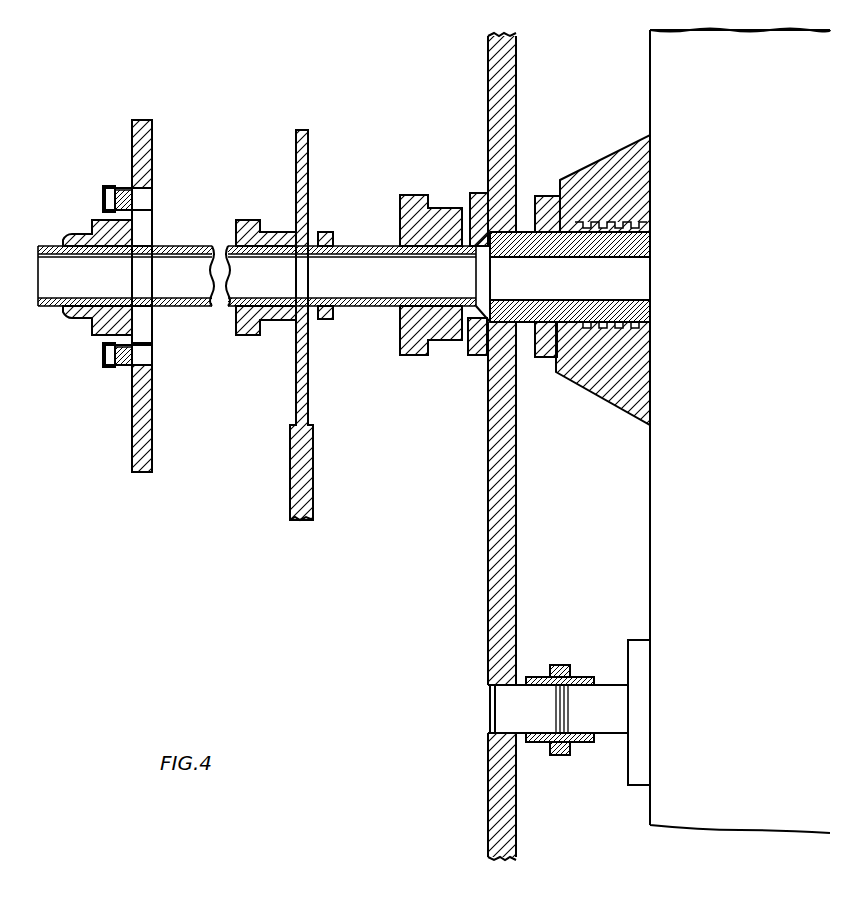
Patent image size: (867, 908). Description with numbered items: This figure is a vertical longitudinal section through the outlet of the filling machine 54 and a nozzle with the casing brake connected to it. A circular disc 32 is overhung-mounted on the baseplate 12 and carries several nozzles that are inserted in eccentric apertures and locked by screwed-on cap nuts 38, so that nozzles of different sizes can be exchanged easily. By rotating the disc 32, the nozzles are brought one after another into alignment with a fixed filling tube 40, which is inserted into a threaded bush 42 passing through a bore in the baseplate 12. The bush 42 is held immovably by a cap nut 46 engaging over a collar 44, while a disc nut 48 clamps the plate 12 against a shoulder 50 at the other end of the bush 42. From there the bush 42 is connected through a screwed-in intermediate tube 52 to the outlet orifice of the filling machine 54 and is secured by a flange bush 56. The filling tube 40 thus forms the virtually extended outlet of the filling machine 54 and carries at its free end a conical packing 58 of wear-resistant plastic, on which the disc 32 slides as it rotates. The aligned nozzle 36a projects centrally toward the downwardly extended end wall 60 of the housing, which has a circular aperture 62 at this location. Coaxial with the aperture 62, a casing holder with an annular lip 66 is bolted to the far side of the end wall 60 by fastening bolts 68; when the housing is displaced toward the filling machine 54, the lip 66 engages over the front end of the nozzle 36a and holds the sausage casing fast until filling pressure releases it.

The baseplate 12 is at (488, 604).
The circular disc 32 is at (316, 496).
The nozzle 36a is at (184, 310).
The cap nut 38 is at (252, 334).
The filling tube 40 is at (359, 248).
The threaded bush 42 is at (461, 336).
The collar 44 is at (406, 332).
The cap nut 46 is at (414, 200).
The disc nut 48 is at (480, 200).
The shoulder 50 is at (526, 204).
The intermediate tube 52 is at (591, 319).
The filling machine 54 is at (735, 452).
The flange bush 56 is at (587, 232).
The conical packing 58 is at (330, 236).
The end wall 60 is at (152, 456).
The circular aperture 62 is at (152, 234).
The annular lip 66 is at (76, 242).
The bolt 68 is at (93, 218).